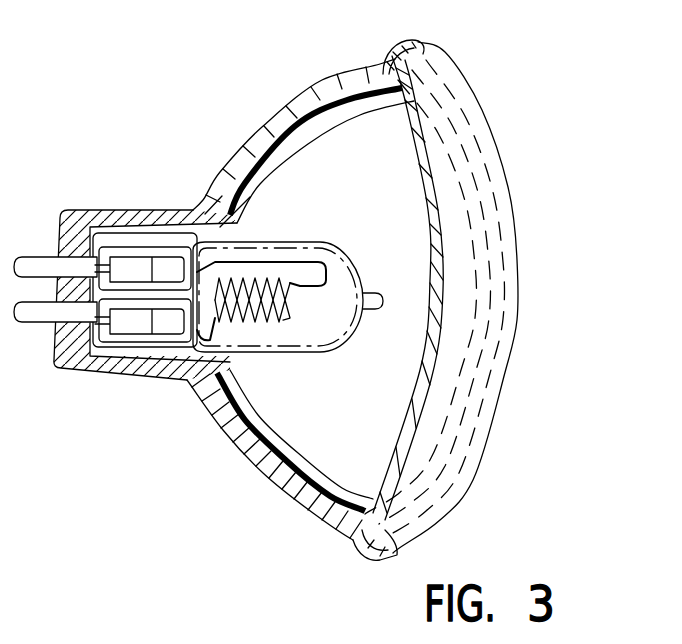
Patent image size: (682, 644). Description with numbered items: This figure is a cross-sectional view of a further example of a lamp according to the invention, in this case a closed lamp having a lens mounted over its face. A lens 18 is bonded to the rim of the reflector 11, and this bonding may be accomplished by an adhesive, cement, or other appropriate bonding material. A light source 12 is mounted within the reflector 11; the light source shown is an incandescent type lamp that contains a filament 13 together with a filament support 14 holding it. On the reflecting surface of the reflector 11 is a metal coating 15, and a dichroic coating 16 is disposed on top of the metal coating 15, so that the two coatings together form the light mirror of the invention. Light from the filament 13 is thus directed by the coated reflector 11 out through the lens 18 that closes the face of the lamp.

The reflector 11 is at (282, 108).
The light source 12 is at (238, 192).
The filament 13 is at (277, 322).
The filament support 14 is at (297, 280).
The metal coating 15 is at (377, 72).
The dichroic coating 16 is at (326, 120).
The lens 18 is at (511, 180).